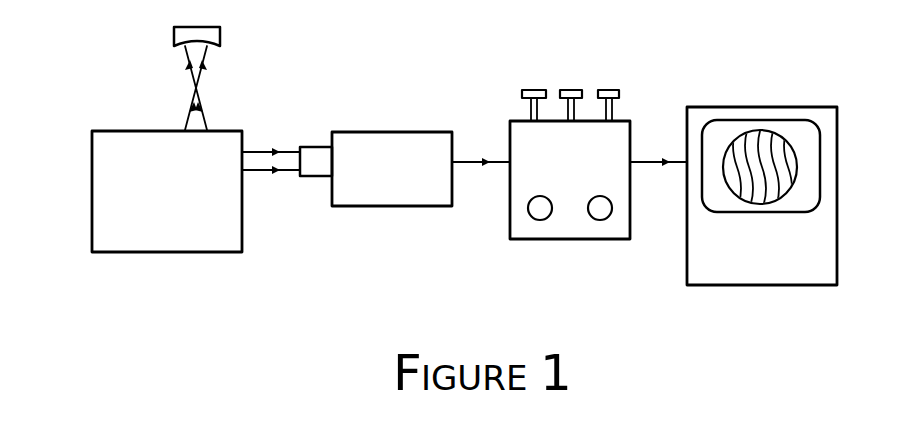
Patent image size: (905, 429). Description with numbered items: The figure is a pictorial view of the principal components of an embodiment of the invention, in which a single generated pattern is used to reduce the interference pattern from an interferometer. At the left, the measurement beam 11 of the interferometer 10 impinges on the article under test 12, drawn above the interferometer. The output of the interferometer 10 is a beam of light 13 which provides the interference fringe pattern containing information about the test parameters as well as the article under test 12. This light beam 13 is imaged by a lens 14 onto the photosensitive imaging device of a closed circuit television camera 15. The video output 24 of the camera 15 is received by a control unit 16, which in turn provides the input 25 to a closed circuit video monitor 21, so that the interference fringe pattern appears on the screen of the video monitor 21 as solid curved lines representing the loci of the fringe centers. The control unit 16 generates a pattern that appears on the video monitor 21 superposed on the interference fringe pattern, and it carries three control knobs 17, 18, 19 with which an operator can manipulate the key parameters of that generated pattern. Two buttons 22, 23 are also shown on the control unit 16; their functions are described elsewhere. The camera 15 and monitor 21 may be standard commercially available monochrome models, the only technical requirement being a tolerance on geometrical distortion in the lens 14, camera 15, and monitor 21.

The interferometer 10 is at (150, 252).
The measurement beam 11 is at (208, 118).
The article under test 12 is at (220, 33).
The beam of light 13 is at (259, 157).
The lens 14 is at (312, 147).
The closed circuit television camera 15 is at (372, 132).
The control unit 16 is at (553, 238).
The control knob 17 is at (535, 90).
The control knob 18 is at (571, 90).
The control knob 19 is at (612, 90).
The video monitor 21 is at (730, 107).
The button 22 is at (528, 216).
The button 23 is at (612, 210).
The video output 24 is at (470, 160).
The input 25 is at (648, 160).